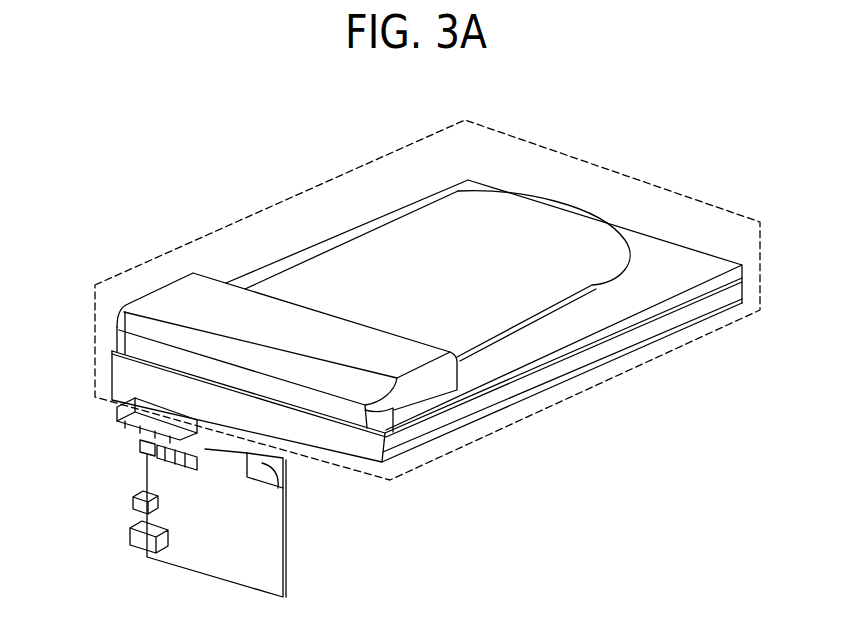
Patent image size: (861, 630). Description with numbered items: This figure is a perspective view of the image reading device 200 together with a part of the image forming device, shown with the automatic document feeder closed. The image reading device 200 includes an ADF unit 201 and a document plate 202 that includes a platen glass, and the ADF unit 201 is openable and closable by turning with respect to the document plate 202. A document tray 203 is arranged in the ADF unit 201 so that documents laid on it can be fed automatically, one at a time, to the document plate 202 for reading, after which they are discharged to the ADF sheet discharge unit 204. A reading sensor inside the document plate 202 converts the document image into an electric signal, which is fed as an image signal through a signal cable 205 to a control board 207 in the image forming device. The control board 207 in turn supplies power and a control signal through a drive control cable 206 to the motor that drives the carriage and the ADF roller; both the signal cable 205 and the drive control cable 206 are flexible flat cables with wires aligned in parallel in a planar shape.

The image reading device 200 is at (492, 150).
The automatic document feeder (ADF) unit 201 is at (162, 290).
The document plate 202 is at (133, 392).
The document tray 203 is at (543, 223).
The ADF sheet discharge unit 204 is at (680, 282).
The signal cable 205 is at (180, 467).
The drive control cable 206 is at (147, 452).
The control board 207 is at (228, 567).